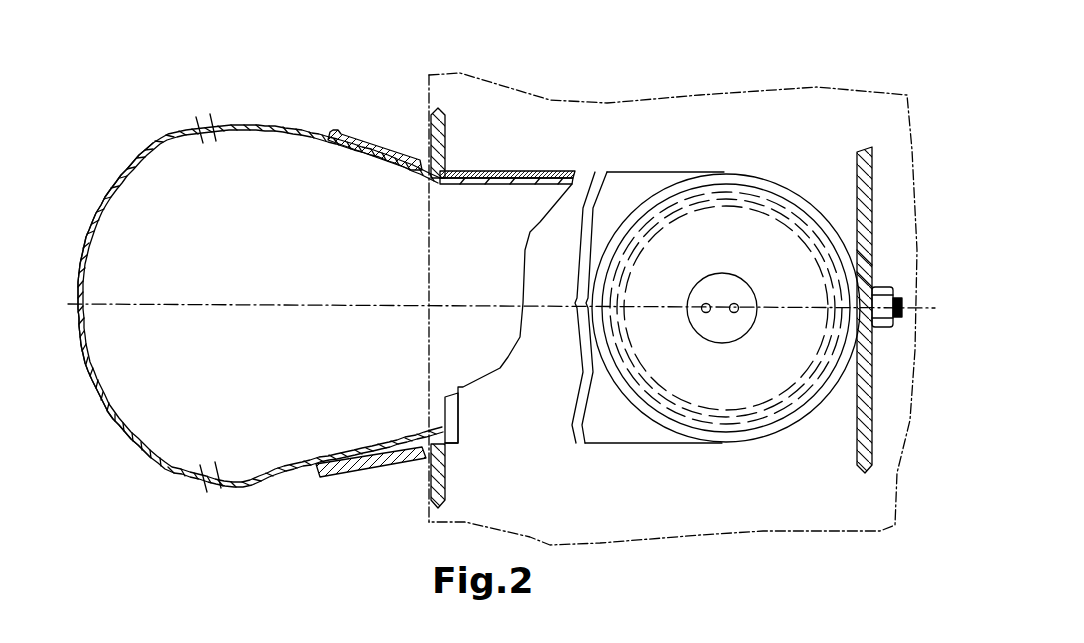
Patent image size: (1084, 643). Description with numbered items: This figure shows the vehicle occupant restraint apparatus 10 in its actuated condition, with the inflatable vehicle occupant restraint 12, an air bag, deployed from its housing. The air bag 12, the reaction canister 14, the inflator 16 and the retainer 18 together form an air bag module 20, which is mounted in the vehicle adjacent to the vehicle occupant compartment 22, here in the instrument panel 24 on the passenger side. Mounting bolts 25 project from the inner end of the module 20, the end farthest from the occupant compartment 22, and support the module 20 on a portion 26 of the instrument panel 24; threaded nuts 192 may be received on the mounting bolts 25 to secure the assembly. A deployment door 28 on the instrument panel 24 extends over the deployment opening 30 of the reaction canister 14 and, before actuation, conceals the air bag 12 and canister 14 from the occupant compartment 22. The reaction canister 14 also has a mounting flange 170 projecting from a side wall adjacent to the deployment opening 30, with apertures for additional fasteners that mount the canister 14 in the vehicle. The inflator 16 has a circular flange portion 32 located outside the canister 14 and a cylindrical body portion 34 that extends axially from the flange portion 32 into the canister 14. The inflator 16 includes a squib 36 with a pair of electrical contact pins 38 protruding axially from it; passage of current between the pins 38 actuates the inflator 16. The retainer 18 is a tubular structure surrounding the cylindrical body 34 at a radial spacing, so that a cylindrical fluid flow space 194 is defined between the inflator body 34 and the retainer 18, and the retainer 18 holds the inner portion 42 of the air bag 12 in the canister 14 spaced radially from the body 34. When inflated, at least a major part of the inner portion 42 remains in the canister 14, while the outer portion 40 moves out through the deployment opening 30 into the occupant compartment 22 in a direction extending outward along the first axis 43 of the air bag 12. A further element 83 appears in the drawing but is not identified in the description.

The vehicle occupant restraint apparatus 10 is at (307, 90).
The inflatable vehicle occupant restraint 12 is at (262, 121).
The reaction canister 14 is at (529, 170).
The inflator 16 is at (643, 199).
The retainer 18 is at (778, 207).
The air bag module 20 is at (822, 204).
The vehicle occupant compartment 22 is at (364, 511).
The instrument panel 24 is at (428, 88).
The mounting bolts 25 is at (897, 298).
The portion of the instrument panel 26 is at (866, 262).
The deployment door 28 is at (427, 143).
The deployment opening 30 is at (398, 152).
The circular flange portion 32 is at (704, 187).
The cylindrical body portion 34 is at (748, 207).
The squib 36 is at (721, 307).
The electrical contact pins 38 is at (734, 314).
The outer portion 40 is at (140, 160).
The inner portion 42 is at (535, 190).
The first axis 43 is at (318, 296).
The center boss 83 is at (757, 285).
The mounting flange 170 is at (450, 426).
The threaded nuts 192 is at (880, 329).
The cylindrical fluid flow space 194 is at (716, 419).